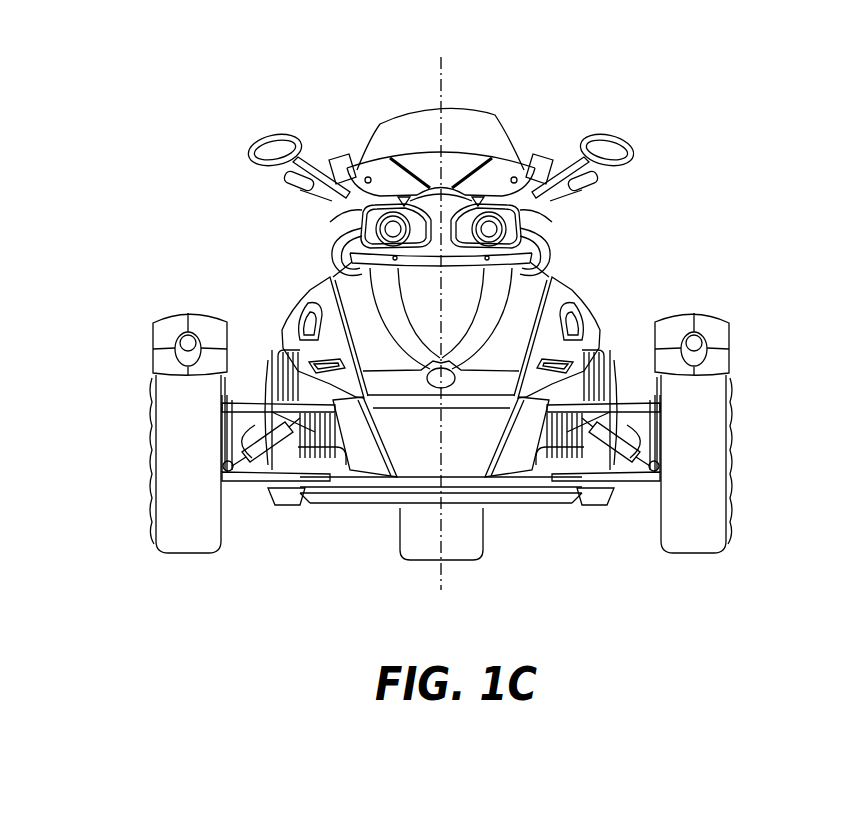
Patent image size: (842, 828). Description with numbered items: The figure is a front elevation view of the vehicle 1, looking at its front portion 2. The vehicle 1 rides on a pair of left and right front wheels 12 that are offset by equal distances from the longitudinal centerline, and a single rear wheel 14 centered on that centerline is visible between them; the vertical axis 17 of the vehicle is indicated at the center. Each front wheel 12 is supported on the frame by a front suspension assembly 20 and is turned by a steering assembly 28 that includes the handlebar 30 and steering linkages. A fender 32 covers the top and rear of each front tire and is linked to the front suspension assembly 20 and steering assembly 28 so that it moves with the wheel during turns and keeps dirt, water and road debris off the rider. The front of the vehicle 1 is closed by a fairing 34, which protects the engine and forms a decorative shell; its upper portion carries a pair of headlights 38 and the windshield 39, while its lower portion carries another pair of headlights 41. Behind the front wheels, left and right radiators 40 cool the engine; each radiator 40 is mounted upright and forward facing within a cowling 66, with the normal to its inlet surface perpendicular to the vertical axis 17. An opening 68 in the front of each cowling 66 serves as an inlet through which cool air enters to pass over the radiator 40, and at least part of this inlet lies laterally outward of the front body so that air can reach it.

The vehicle 1 is at (196, 83).
The front portion 2 is at (233, 595).
The front wheels 12 is at (182, 518).
The rear wheel 14 is at (473, 555).
The vertical axis 17 is at (452, 68).
The front suspension assembly 20 is at (220, 423).
The steering assembly 28 is at (339, 136).
The handlebar 30 is at (536, 153).
The fender 32 is at (162, 330).
The fairing 34 is at (530, 297).
The headlights 38 is at (383, 226).
The windshield 39 is at (433, 113).
The radiators 40 is at (303, 443).
The headlights 41 is at (304, 327).
The cowling 66 is at (267, 377).
The opening 68 is at (271, 377).